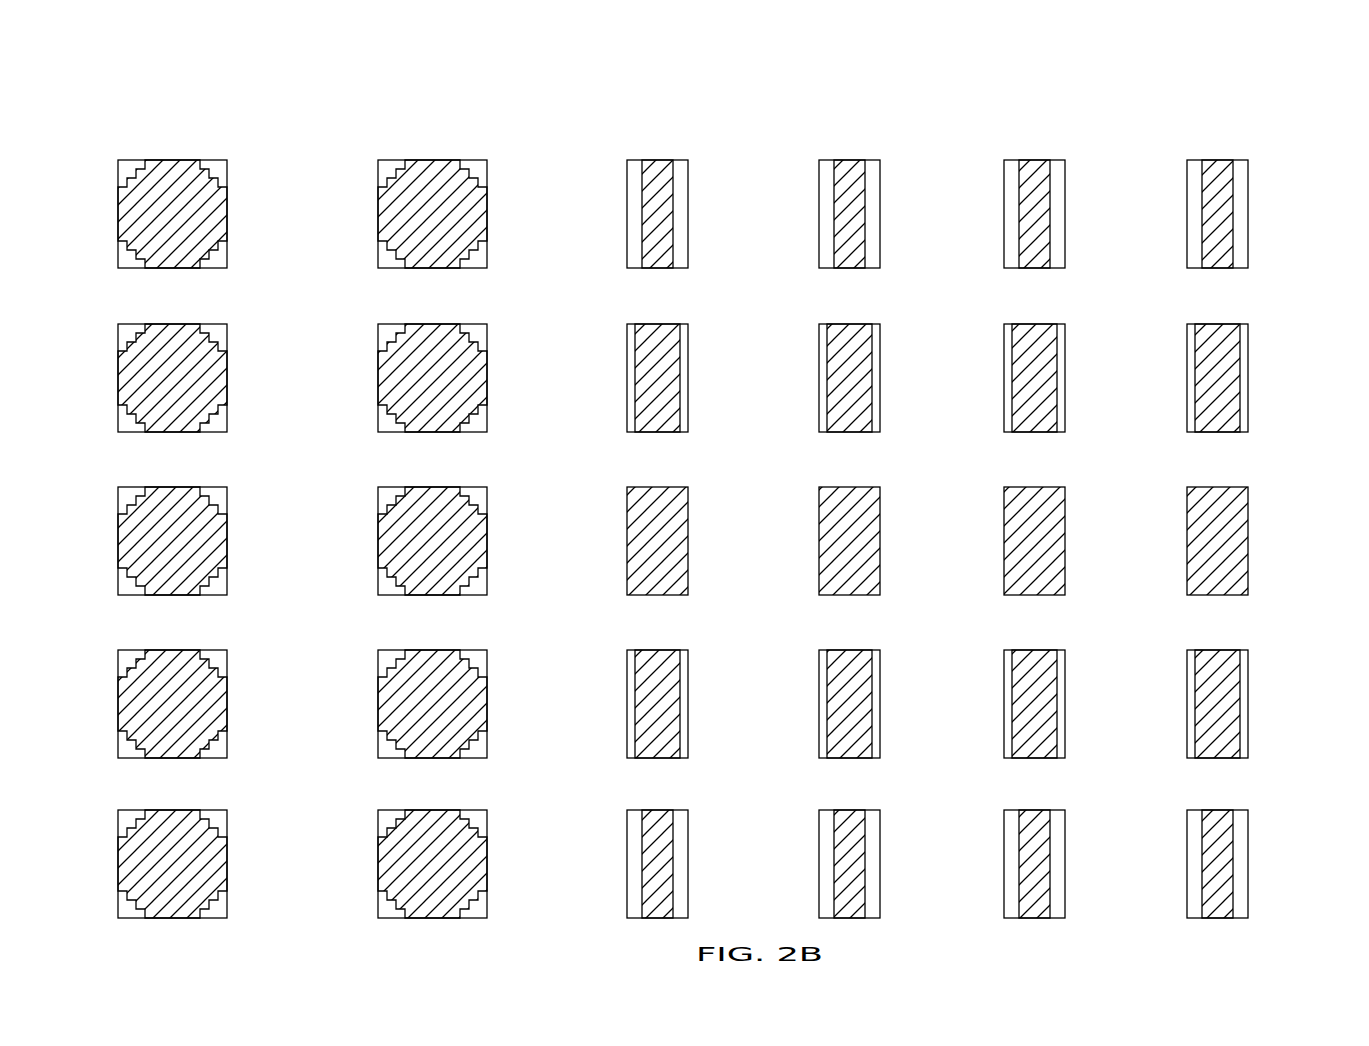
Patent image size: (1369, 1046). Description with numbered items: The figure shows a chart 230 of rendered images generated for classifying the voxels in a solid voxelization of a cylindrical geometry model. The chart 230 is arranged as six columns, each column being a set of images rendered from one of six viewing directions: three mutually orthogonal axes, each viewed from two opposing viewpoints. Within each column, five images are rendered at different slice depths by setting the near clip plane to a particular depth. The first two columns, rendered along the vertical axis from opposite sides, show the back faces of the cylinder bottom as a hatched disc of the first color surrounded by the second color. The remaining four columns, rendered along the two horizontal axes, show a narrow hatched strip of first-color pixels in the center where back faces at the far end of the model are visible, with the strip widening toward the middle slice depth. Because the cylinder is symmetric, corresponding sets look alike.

The chart 230 is at (1240, 88).